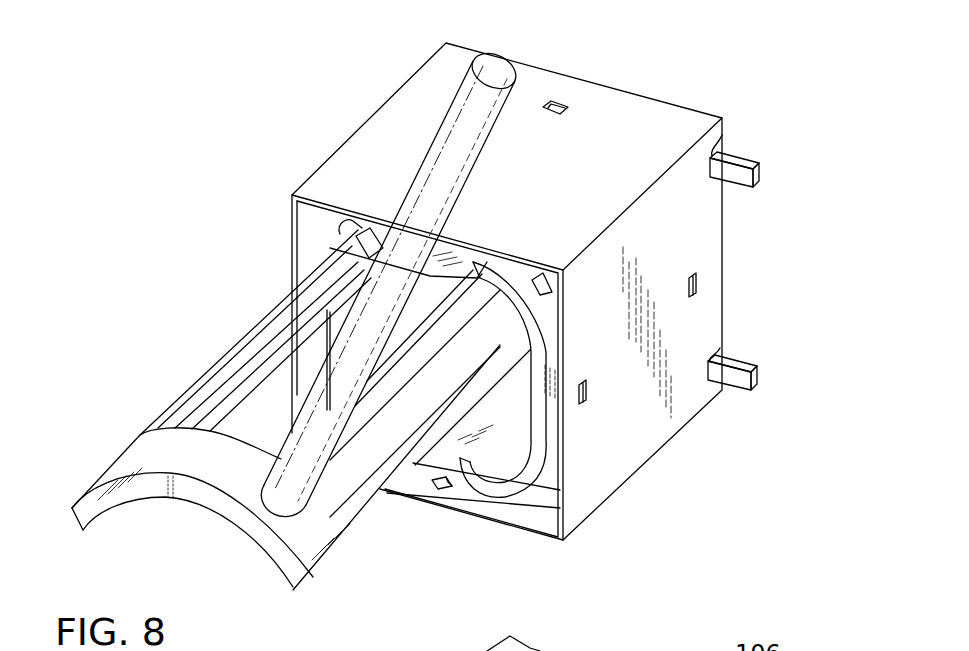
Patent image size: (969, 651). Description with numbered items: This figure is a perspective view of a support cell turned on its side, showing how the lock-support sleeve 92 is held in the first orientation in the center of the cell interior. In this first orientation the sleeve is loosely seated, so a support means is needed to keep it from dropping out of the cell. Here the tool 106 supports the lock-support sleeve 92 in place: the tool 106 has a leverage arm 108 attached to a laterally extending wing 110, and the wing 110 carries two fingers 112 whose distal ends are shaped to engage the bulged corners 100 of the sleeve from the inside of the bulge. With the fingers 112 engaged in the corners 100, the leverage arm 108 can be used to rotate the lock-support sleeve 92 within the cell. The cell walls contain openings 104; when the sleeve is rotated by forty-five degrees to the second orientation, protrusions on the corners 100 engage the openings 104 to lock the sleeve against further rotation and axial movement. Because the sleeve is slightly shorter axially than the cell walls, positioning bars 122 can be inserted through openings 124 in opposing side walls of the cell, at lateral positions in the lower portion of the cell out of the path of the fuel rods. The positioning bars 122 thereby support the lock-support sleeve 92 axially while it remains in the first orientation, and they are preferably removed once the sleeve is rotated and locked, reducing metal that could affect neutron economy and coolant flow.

The lock-support sleeve 92 is at (460, 458).
The corners 100 is at (528, 490).
The openings 104 is at (560, 104).
The tool 106 is at (293, 405).
The leverage arm 108 is at (497, 65).
The laterally extending wing 110 is at (227, 512).
The fingers 112 is at (371, 492).
The positioning bars 122 is at (760, 190).
The openings 124 is at (722, 135).